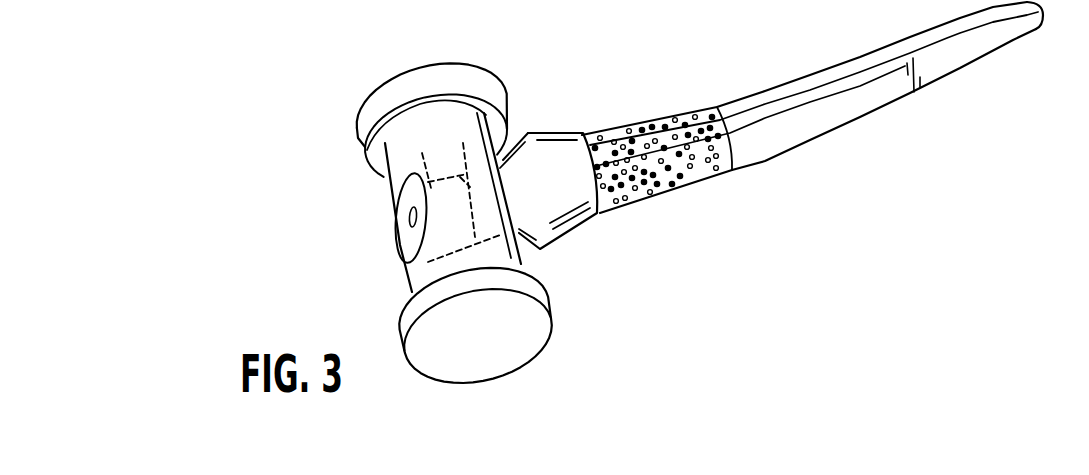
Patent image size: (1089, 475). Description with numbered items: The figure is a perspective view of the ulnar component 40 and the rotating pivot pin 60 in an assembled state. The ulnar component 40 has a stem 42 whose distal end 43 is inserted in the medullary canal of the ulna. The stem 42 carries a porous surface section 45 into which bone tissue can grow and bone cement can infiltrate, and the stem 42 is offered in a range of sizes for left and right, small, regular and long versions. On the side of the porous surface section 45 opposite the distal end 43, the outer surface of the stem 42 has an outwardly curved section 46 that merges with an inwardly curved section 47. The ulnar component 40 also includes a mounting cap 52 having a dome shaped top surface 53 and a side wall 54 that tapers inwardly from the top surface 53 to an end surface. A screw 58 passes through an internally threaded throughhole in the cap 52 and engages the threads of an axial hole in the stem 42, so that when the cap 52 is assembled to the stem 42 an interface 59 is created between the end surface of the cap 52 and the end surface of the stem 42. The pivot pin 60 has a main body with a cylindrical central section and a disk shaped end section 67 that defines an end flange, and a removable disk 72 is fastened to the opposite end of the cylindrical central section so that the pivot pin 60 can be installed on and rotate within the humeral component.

The ulnar component 40 is at (824, 168).
The stem 42 is at (812, 77).
The distal end 43 is at (1010, 30).
The porous surface section 45 is at (640, 122).
The outwardly curved section 46 is at (556, 132).
The inwardly curved section 47 is at (518, 123).
The mounting cap 52 is at (410, 286).
The dome shaped top surface 53 is at (410, 250).
The side wall 54 is at (454, 191).
The screw 58 is at (408, 214).
The interface 59 is at (464, 175).
The pivot pin 60 is at (524, 377).
The disk shaped end section 67 is at (532, 330).
The removable disk 72 is at (385, 96).